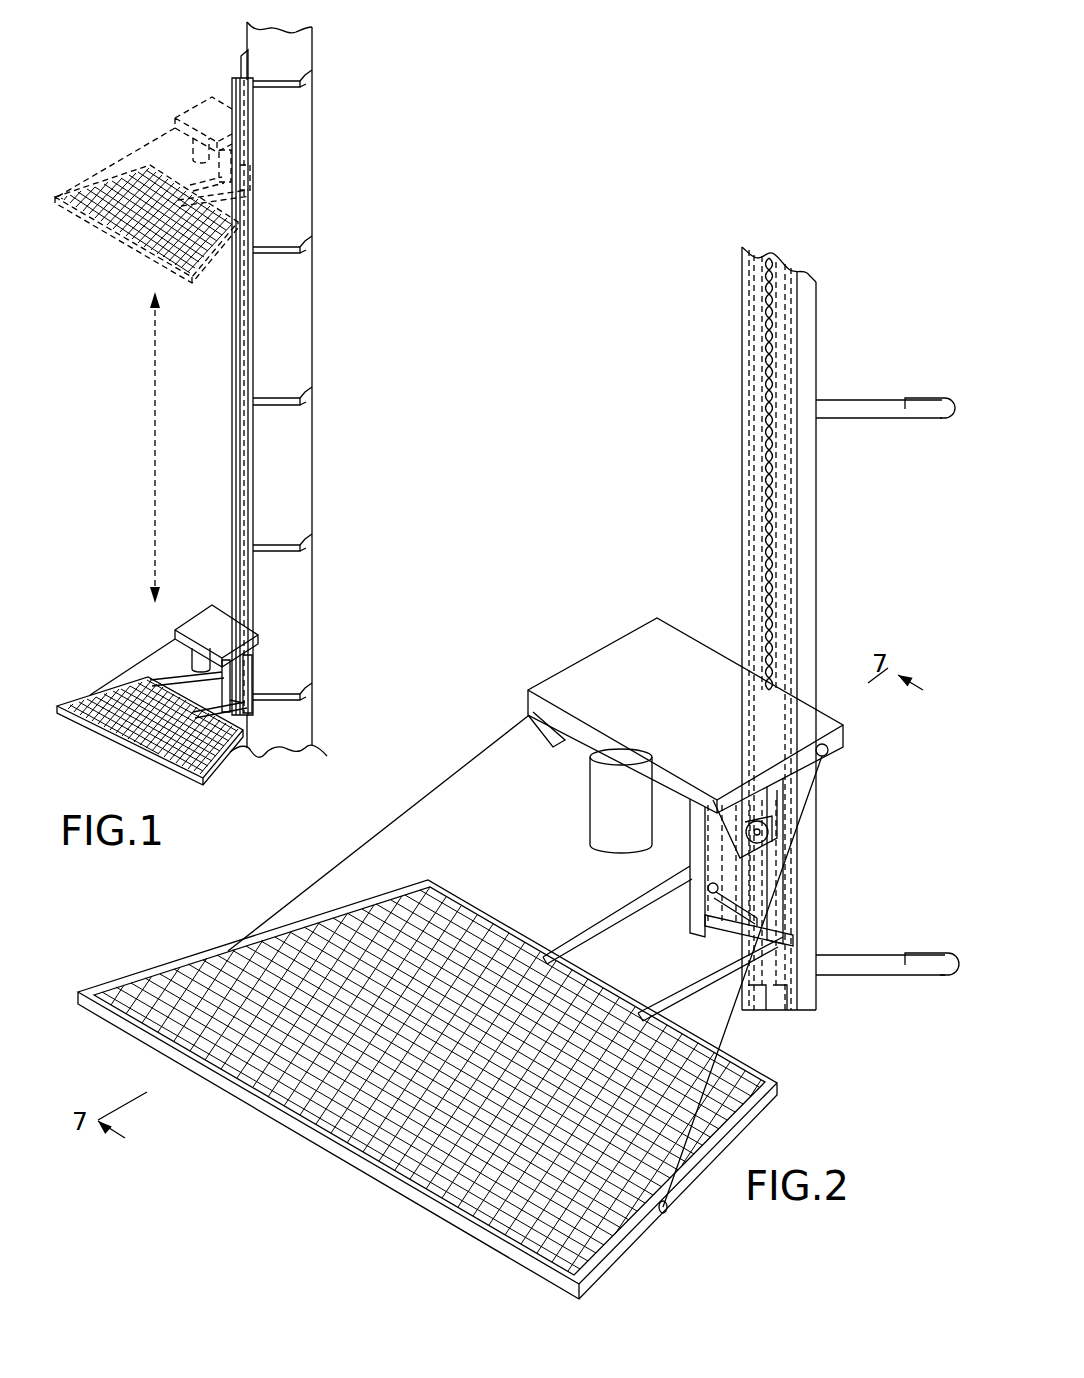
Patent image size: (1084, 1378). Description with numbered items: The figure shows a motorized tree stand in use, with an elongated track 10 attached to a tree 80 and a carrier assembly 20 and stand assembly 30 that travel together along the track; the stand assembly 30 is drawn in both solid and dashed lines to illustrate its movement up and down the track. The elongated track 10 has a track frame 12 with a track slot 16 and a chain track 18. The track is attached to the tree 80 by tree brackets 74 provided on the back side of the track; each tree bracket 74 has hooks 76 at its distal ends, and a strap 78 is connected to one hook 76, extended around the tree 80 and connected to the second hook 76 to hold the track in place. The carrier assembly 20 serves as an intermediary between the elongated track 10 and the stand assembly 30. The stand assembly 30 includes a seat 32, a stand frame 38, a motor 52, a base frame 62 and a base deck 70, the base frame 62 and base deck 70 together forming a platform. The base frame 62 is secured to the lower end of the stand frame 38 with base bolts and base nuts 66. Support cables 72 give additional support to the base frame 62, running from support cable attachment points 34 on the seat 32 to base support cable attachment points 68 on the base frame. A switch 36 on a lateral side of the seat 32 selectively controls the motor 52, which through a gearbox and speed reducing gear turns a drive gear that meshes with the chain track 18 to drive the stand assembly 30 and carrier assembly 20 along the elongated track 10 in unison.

In FIG. 1, the elongated track 10 is at (271, 382).
In FIG. 2, the elongated track 10 is at (805, 637).
In FIG. 1, the track frame 12 is at (253, 335).
In FIG. 2, the track frame 12 is at (742, 410).
In FIG. 2, the track slot 16 is at (762, 520).
In FIG. 1, the chain track 18 is at (232, 470).
In FIG. 2, the chain track 18 is at (764, 507).
In FIG. 1, the carrier assembly 20 is at (271, 382).
In FIG. 2, the carrier assembly 20 is at (818, 637).
In FIG. 1, the stand assembly 30 is at (118, 97).
In FIG. 2, the stand assembly 30 is at (481, 945).
In FIG. 1, the seat 32 is at (212, 605).
In FIG. 2, the seat 32 is at (640, 638).
In FIG. 2, the support cable attachment points 34 is at (830, 752).
In FIG. 2, the switch 36 is at (752, 818).
In FIG. 2, the stand frame 38 is at (795, 860).
In FIG. 1, the motor 52 is at (190, 652).
In FIG. 2, the motor 52 is at (598, 805).
In FIG. 2, the base frame 62 is at (588, 917).
In FIG. 2, the base nuts 66 is at (716, 906).
In FIG. 2, the base support cable attachment points 68 is at (666, 1212).
In FIG. 1, the base deck 70 is at (98, 692).
In FIG. 2, the base deck 70 is at (216, 950).
In FIG. 2, the support cables 72 is at (812, 787).
In FIG. 1, the tree brackets 74 is at (262, 406).
In FIG. 2, the tree brackets 74 is at (860, 418).
In FIG. 2, the hooks 76 is at (955, 400).
In FIG. 1, the strap 78 is at (300, 254).
In FIG. 1, the tree 80 is at (302, 356).